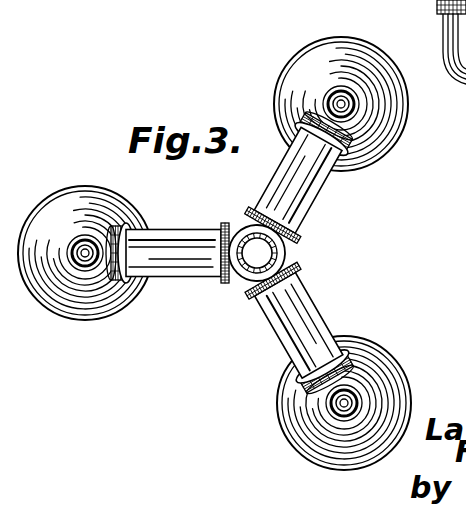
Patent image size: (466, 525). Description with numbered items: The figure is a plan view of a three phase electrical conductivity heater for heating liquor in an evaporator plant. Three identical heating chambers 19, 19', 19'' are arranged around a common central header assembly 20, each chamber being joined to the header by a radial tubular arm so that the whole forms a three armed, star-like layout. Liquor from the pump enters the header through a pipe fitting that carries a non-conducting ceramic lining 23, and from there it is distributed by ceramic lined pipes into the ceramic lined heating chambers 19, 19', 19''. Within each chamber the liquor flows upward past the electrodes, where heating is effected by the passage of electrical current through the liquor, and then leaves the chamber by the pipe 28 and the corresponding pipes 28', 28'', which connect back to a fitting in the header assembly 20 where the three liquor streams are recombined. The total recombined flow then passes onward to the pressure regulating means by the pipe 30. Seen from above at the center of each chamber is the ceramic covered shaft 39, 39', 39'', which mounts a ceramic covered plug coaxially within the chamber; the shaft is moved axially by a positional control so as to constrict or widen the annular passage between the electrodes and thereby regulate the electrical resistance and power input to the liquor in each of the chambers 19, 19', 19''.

The heating chamber 19 is at (85, 256).
The heating chamber 19' is at (356, 87).
The heating chamber 19'' is at (327, 402).
The common central header assembly 20 is at (273, 265).
The non-conducting ceramic lining 23 is at (447, 31).
The pipe 28 is at (167, 241).
The pipe 28' is at (306, 175).
The pipe 28'' is at (301, 330).
The pipe 30 is at (248, 268).
The ceramic covered shaft 39 is at (75, 293).
The ceramic covered shaft 39' is at (380, 115).
The ceramic covered shaft 39'' is at (375, 378).